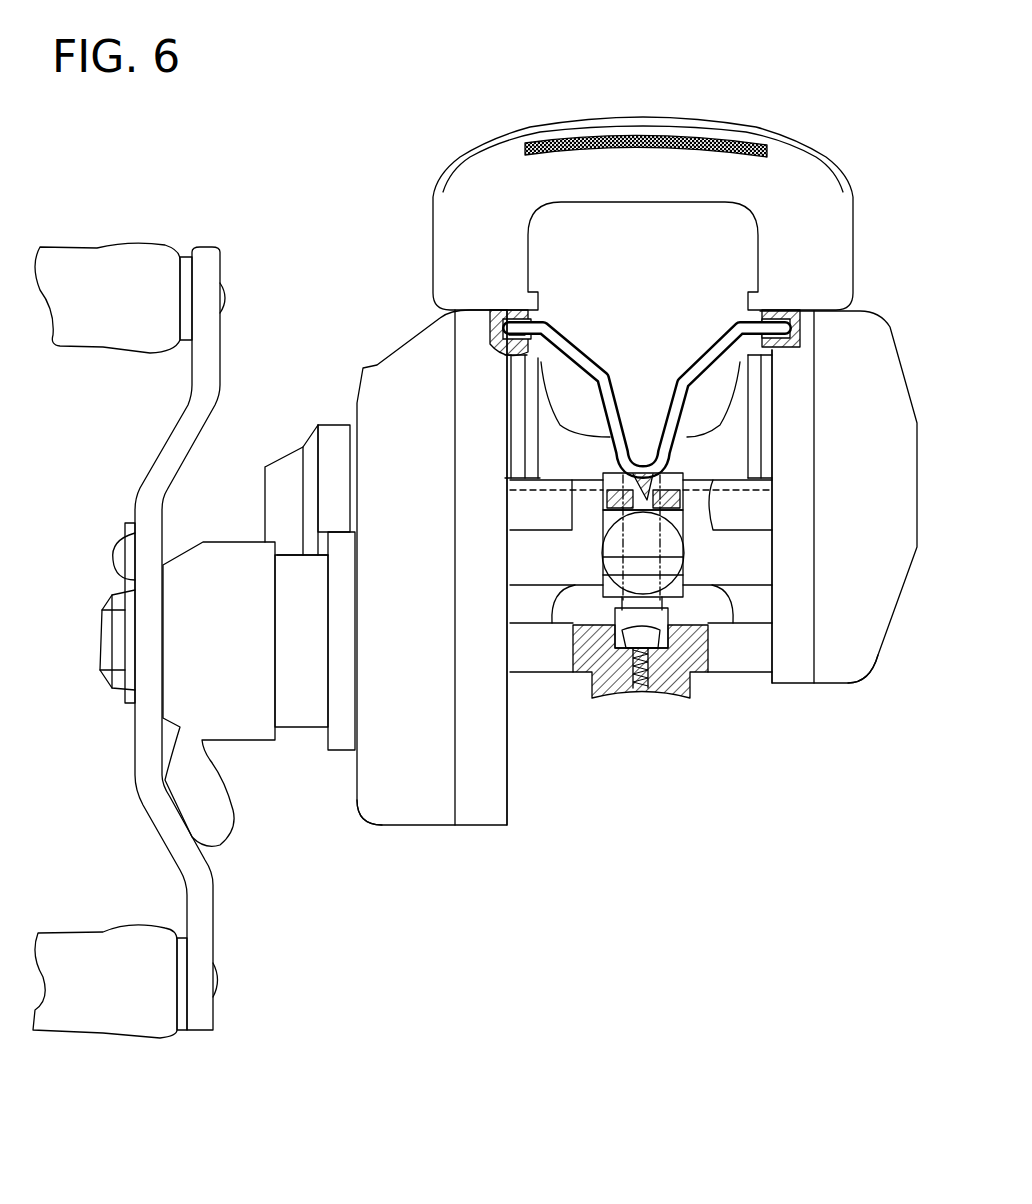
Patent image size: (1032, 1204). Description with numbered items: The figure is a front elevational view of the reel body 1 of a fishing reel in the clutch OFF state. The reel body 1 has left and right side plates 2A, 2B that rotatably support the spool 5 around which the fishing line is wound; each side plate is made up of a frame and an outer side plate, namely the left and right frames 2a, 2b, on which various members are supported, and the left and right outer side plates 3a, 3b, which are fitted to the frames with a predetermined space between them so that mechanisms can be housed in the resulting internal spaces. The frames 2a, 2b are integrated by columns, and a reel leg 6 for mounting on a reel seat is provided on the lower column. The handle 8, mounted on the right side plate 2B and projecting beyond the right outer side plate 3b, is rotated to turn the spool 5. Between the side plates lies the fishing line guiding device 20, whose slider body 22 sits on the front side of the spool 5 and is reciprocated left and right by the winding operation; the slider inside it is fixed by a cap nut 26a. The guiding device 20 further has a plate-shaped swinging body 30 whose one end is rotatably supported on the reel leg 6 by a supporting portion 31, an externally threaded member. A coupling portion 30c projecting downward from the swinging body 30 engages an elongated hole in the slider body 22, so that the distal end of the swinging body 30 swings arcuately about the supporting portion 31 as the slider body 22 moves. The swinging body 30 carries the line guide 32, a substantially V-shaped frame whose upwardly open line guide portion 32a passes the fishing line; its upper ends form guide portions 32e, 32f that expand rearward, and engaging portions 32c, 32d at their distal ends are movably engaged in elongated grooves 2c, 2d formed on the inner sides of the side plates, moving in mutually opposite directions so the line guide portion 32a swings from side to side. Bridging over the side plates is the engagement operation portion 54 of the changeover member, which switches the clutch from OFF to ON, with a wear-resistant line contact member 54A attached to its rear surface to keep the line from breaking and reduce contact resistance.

The reel body 1 is at (437, 845).
The left side plate 2A is at (808, 692).
The right side plate 2B is at (411, 308).
The left frame 2a is at (783, 680).
The right frame 2b is at (497, 788).
The elongated groove 2c is at (790, 310).
The elongated groove 2d is at (507, 312).
The left outer side plate 3a is at (850, 675).
The right outer side plate 3b is at (383, 817).
The spool 5 is at (545, 413).
The reel leg 6 is at (663, 690).
The handle 8 is at (208, 351).
The fishing line guiding device 20 is at (556, 456).
The slider body 22 is at (737, 542).
The cap nut 26a is at (620, 548).
The swinging body 30 is at (613, 610).
The coupling portion 30c is at (773, 483).
The supporting portion 31 is at (642, 688).
The line guide 32 is at (712, 442).
The line guide portion 32a is at (627, 413).
The engaging portion 32c is at (767, 327).
The engaging portion 32d is at (527, 330).
The guide portion 32e is at (715, 343).
The guide portion 32f is at (572, 350).
The engagement operation portion 54 is at (507, 166).
The line contact member 54A is at (602, 138).